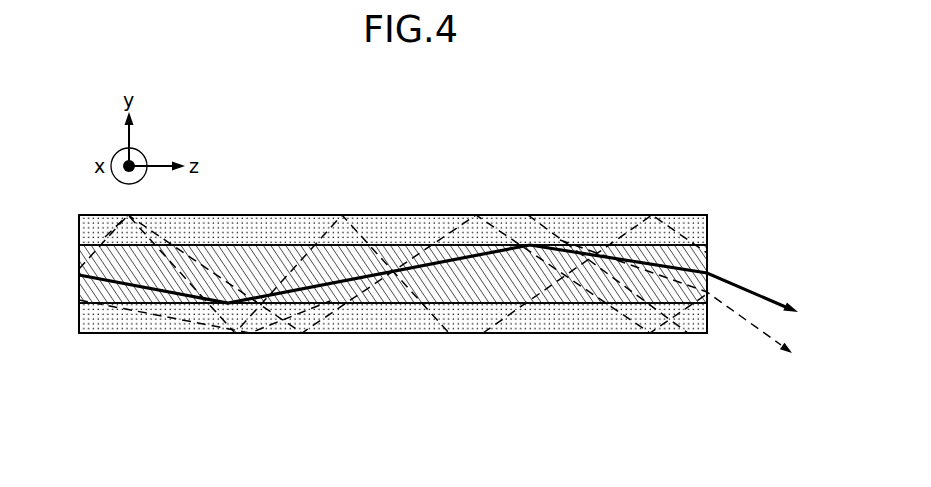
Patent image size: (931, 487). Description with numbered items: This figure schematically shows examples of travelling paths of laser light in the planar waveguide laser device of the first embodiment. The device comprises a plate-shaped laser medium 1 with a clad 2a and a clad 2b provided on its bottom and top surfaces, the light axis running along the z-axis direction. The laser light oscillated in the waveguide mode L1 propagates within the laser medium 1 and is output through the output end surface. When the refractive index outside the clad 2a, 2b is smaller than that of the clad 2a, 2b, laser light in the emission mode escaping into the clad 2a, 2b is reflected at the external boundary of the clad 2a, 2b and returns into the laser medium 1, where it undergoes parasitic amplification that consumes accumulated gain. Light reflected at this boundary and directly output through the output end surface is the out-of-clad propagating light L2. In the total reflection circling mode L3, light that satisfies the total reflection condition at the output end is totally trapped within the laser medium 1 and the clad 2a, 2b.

The laser medium 1 is at (97, 272).
The clad 2a is at (97, 318).
The clad 2b is at (97, 232).
The waveguide mode L1 is at (747, 290).
The out-of-clad propagating light L2 is at (758, 328).
The total reflection circling mode L3 is at (590, 315).